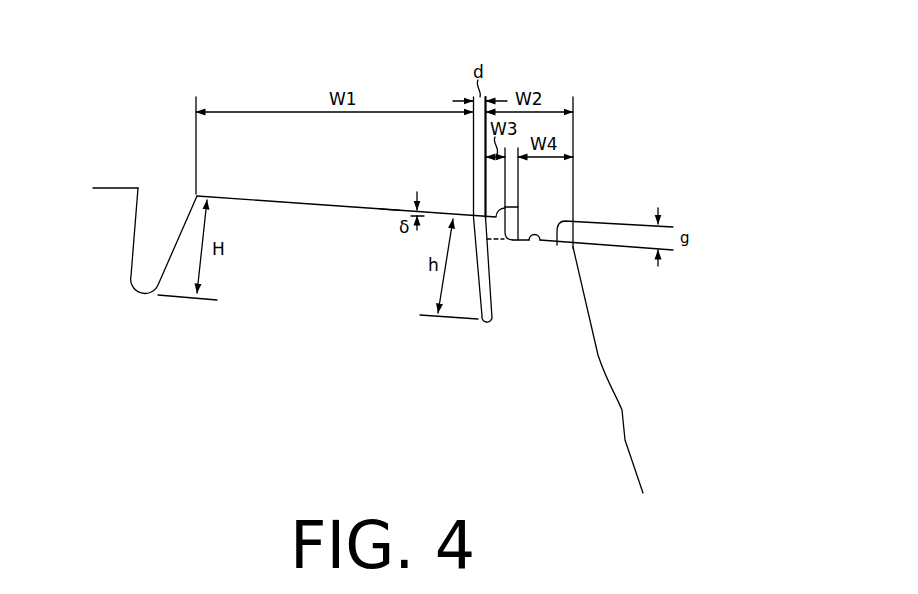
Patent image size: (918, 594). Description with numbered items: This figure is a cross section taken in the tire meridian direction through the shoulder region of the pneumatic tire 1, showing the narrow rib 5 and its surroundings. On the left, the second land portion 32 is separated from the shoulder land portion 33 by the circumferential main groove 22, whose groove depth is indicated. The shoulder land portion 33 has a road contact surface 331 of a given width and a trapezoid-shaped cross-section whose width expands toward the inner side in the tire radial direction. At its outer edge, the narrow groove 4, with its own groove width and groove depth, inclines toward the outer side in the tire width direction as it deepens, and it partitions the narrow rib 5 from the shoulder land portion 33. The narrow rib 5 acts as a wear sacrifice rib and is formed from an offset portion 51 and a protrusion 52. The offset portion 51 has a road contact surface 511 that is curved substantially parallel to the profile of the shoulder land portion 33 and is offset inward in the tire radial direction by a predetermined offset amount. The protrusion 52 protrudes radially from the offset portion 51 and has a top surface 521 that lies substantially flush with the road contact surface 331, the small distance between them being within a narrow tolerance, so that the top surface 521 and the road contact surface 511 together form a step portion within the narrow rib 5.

The pneumatic tire 1 is at (571, 88).
The narrow groove 4 is at (492, 320).
The narrow rib 5 is at (589, 204).
The circumferential main groove 22 is at (162, 213).
The second land portion 32 is at (101, 187).
The shoulder land portion 33 is at (296, 202).
The road contact surface 331 is at (392, 209).
The offset portion 51 is at (603, 217).
The protrusion 52 is at (519, 214).
The road contact surface 511 is at (538, 243).
The top surface 521 is at (518, 207).